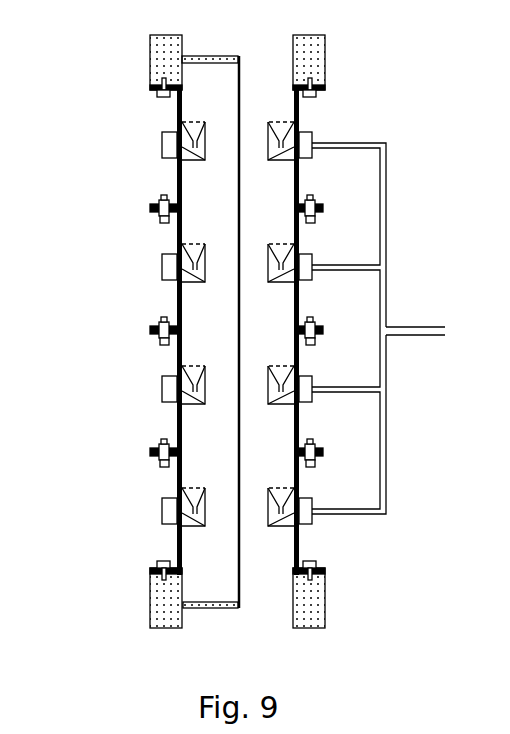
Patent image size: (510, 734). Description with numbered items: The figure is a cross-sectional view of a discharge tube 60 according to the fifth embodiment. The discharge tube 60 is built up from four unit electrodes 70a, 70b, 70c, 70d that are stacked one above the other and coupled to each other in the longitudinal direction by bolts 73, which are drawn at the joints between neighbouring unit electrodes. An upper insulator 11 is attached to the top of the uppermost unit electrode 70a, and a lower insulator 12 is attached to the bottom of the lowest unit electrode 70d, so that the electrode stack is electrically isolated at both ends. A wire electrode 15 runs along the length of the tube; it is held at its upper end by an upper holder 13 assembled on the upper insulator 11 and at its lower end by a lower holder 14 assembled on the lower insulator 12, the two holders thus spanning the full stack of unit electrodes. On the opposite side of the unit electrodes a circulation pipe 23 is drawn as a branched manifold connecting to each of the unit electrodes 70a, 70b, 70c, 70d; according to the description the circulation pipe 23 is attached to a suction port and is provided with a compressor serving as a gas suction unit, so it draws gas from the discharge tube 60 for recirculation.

The discharge tube 60 is at (60, 32).
The unit electrode 70a is at (118, 88).
The unit electrode 70b is at (118, 210).
The unit electrode 70c is at (118, 332).
The unit electrode 70d is at (118, 454).
The bolt 73 is at (157, 220).
The upper insulator 11 is at (322, 66).
The lower insulator 12 is at (327, 605).
The upper holder 13 is at (210, 56).
The lower holder 14 is at (218, 610).
The wire electrode 15 is at (240, 563).
The circulation pipe 23 is at (388, 226).